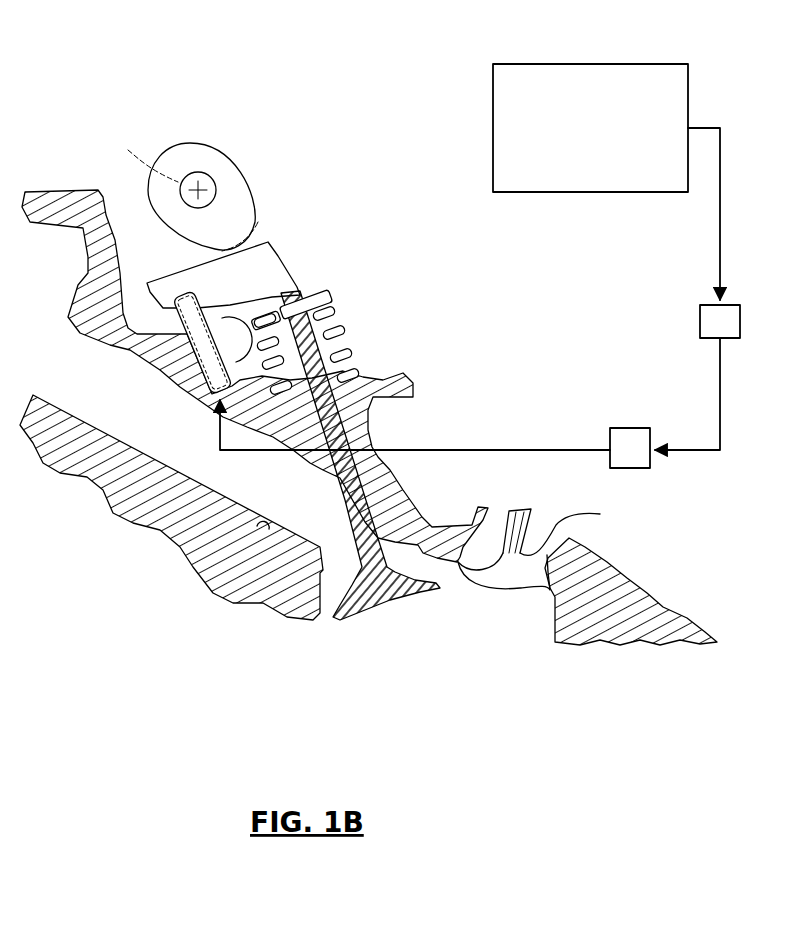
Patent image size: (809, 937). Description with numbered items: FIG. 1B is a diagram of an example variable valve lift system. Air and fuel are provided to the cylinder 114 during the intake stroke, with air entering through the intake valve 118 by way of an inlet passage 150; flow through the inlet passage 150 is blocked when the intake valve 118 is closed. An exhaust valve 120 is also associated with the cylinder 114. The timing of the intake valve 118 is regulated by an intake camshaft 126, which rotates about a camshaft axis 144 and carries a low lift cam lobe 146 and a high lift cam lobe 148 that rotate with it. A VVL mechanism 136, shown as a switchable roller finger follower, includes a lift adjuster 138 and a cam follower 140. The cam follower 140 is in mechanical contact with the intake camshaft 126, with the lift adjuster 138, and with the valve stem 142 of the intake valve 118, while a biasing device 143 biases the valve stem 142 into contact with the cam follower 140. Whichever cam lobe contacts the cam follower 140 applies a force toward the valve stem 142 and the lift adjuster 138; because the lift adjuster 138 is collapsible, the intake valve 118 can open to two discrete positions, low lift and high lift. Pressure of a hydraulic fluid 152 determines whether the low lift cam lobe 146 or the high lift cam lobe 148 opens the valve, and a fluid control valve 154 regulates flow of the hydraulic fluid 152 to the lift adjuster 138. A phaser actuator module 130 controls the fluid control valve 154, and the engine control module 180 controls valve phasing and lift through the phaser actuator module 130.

The cylinder 114 is at (548, 615).
The intake valve 118 is at (380, 543).
The exhaust valve 120 is at (530, 530).
The intake camshaft 126 is at (200, 172).
The phaser actuator module 130 is at (742, 322).
The variable valve lift (VVL) mechanism 136 is at (357, 210).
The lift adjuster 138 is at (170, 363).
The cam follower 140 is at (270, 243).
The valve stem 142 is at (305, 294).
The biasing device 143 is at (345, 328).
The camshaft axis 144 is at (142, 156).
The low lift cam lobe 146 is at (245, 175).
The high lift cam lobe 148 is at (262, 226).
The inlet passage 150 is at (263, 527).
The hydraulic fluid 152 is at (532, 449).
The fluid control valve 154 is at (650, 468).
The engine control module (ECM) 180 is at (588, 64).